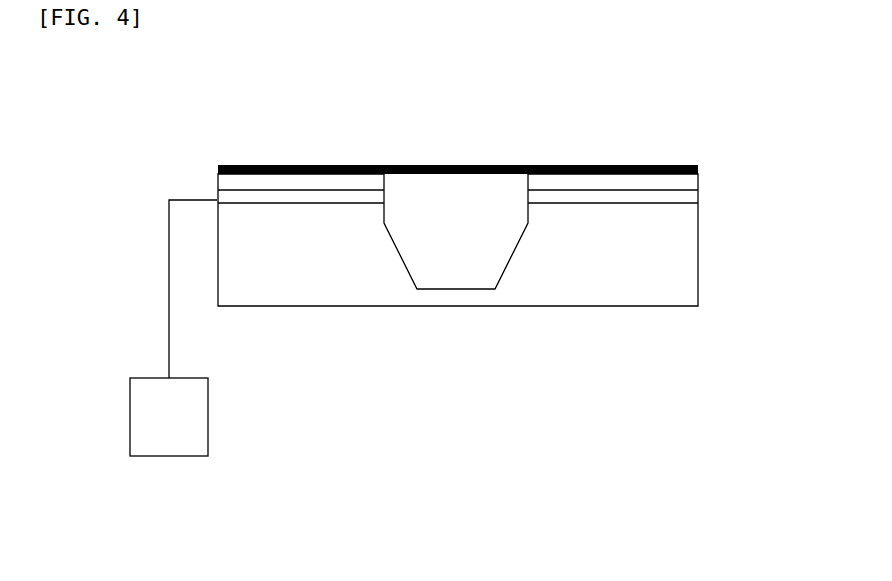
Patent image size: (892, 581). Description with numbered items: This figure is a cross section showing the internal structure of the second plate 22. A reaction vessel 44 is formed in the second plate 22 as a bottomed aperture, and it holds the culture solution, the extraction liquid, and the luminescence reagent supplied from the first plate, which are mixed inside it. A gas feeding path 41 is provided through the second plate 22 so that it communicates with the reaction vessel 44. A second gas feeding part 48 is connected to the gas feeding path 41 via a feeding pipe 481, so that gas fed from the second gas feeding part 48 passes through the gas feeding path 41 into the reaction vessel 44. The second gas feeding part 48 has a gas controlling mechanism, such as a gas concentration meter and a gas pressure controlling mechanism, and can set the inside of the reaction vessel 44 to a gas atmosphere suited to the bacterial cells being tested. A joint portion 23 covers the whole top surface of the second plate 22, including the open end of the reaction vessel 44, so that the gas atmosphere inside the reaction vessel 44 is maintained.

The second plate 22 is at (769, 158).
The joint portion 23 is at (640, 165).
The gas feeding path 41 is at (217, 193).
The reaction vessel 44 is at (472, 289).
The second gas feeding part 48 is at (165, 460).
The feeding pipe 481 is at (170, 328).